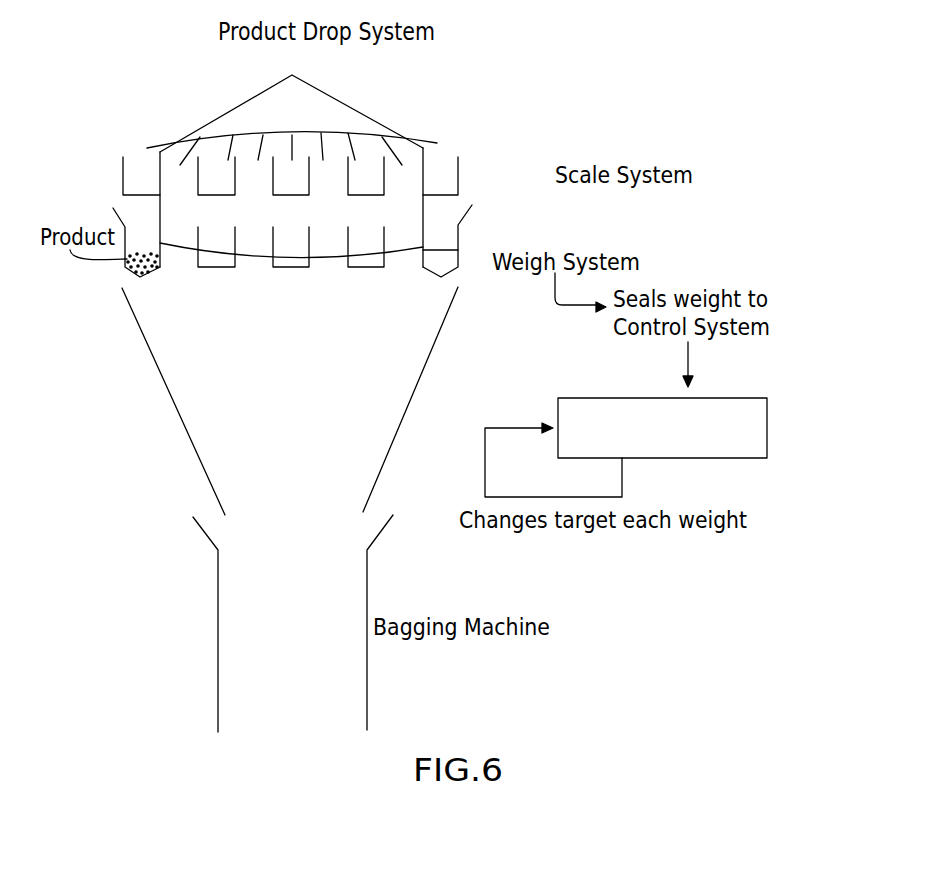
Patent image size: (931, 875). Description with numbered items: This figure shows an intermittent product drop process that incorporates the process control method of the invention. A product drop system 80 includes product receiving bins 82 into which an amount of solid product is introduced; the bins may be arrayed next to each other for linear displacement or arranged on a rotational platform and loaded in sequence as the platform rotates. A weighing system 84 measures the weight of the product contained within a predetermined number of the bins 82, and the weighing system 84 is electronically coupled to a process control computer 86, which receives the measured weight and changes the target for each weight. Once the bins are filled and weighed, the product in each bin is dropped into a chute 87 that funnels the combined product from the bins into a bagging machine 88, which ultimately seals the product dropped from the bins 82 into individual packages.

The product drop system 80 is at (149, 123).
The product receiving bins 82 is at (135, 180).
The weighing system 84 is at (457, 230).
The process control computer 86 is at (758, 450).
The chute 87 is at (430, 368).
The bagging machine 88 is at (368, 592).